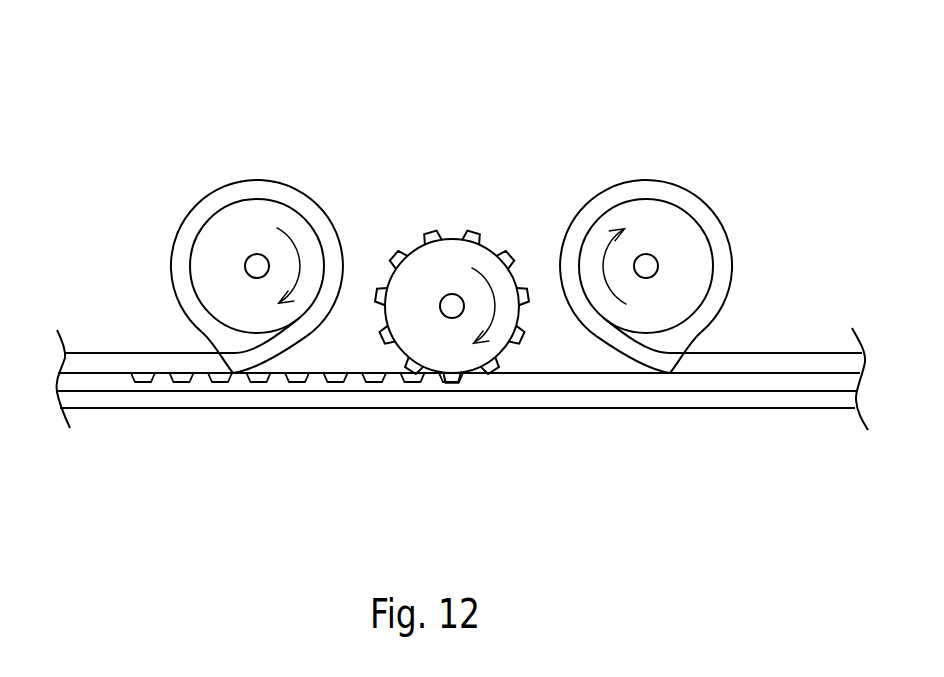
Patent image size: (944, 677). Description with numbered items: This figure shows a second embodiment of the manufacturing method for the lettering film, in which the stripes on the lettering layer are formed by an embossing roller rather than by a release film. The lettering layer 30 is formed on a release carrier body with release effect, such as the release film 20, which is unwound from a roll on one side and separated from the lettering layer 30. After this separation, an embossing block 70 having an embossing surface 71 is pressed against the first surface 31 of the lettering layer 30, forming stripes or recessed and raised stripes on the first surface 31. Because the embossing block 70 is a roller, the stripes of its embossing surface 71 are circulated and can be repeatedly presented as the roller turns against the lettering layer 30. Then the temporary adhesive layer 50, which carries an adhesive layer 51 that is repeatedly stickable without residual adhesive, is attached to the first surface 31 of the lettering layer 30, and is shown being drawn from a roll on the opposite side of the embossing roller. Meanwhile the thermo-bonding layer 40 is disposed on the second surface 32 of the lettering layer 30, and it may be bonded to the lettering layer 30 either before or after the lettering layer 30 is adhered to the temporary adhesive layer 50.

The release film 20 is at (701, 197).
The lettering layer 30 is at (810, 382).
The first surface 31 is at (341, 372).
The second surface 32 is at (518, 392).
The thermo-bonding layer 40 is at (620, 409).
The temporary adhesive layer 50 is at (137, 353).
The adhesive layer 51 is at (257, 180).
The embossing block 70 is at (492, 245).
The embossing surface 71 is at (473, 236).